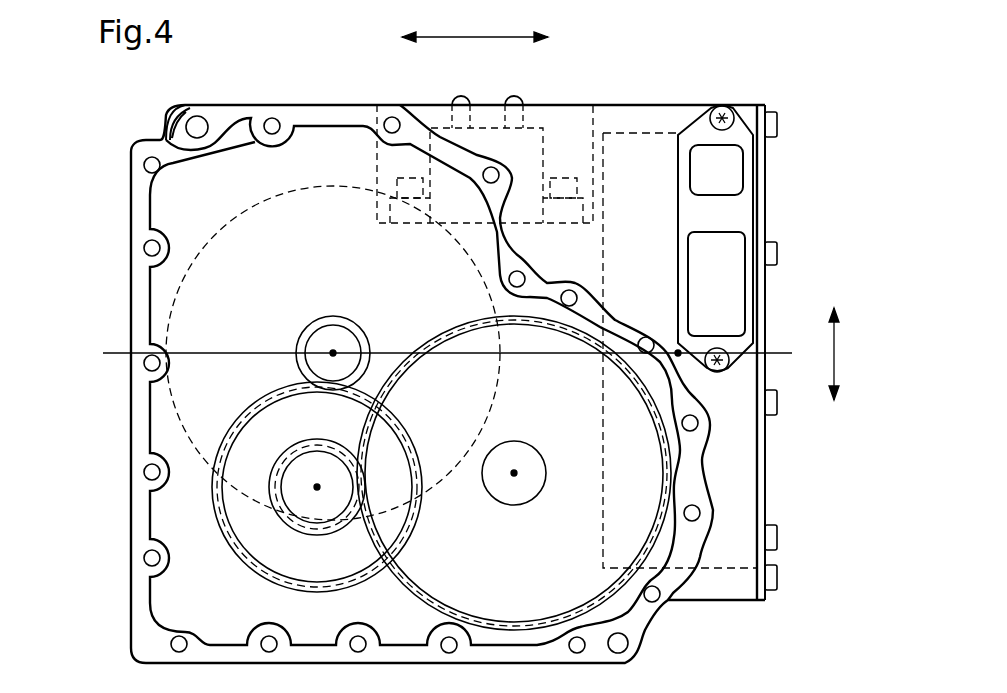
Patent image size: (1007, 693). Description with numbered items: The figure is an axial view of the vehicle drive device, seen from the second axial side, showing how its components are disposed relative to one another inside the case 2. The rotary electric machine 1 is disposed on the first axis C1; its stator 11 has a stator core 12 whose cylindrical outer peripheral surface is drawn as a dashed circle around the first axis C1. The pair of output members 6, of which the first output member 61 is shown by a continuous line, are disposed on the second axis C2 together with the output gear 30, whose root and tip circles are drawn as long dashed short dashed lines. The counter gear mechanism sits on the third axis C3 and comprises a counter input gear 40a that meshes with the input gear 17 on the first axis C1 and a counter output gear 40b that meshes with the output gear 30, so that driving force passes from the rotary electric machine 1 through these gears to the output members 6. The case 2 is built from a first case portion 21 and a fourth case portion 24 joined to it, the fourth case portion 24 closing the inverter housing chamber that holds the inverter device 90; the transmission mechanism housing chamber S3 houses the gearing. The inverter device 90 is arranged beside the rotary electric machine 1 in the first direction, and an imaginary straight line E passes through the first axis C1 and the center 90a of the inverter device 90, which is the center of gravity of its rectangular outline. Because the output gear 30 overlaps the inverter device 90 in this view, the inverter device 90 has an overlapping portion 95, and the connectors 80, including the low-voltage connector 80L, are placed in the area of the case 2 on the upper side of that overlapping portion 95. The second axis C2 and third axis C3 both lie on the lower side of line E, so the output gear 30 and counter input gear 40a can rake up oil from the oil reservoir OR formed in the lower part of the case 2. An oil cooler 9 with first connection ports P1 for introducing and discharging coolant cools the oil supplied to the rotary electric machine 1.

The rotary electric machine 1 is at (228, 222).
The case 2 is at (119, 436).
The first case portion 21 is at (131, 300).
The fourth case portion 24 is at (767, 198).
The oil cooler 9 is at (550, 152).
The stator core 12 is at (262, 350).
The stator 11 is at (209, 240).
The input gear 17 is at (310, 324).
The output gear 30 is at (400, 597).
The counter input gear 40a is at (212, 497).
The counter output gear 40b is at (285, 528).
The first output member 61 is at (537, 438).
The output members 6 is at (533, 447).
The low-voltage connector 80L is at (680, 239).
The connectors 80 is at (705, 250).
The inverter device 90 is at (556, 352).
The center of the inverter device 90a is at (678, 350).
The overlapping portion 95 is at (625, 496).
The first axis C1 is at (335, 352).
The second axis C2 is at (514, 473).
The third axis C3 is at (317, 487).
The imaginary straight line E is at (438, 354).
The oil reservoir OR is at (493, 600).
The first connection port P1 is at (514, 93).
The transmission mechanism housing chamber S3 is at (261, 153).